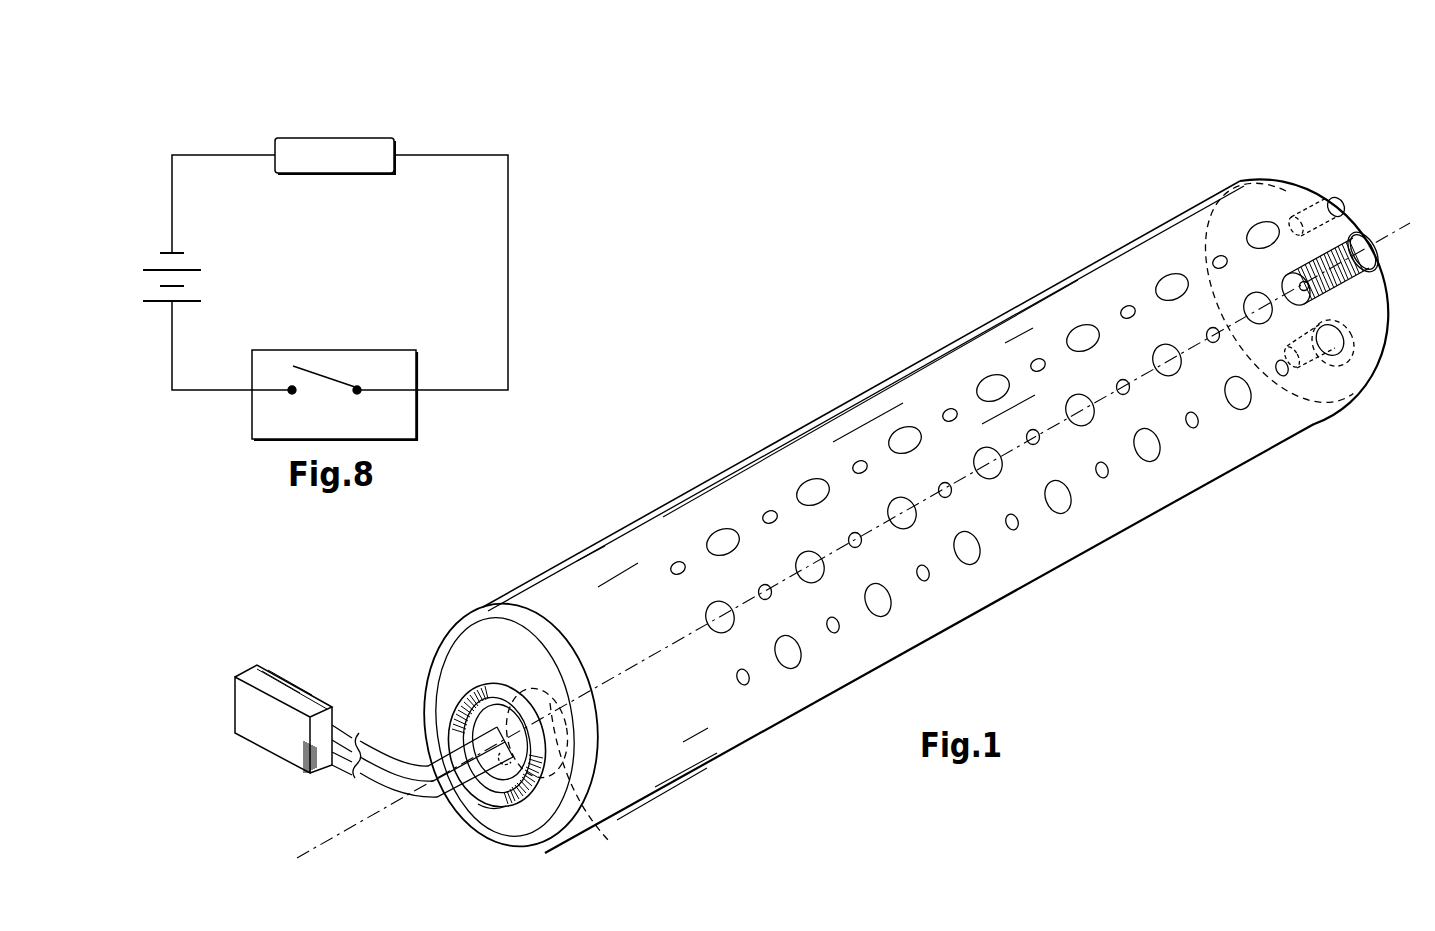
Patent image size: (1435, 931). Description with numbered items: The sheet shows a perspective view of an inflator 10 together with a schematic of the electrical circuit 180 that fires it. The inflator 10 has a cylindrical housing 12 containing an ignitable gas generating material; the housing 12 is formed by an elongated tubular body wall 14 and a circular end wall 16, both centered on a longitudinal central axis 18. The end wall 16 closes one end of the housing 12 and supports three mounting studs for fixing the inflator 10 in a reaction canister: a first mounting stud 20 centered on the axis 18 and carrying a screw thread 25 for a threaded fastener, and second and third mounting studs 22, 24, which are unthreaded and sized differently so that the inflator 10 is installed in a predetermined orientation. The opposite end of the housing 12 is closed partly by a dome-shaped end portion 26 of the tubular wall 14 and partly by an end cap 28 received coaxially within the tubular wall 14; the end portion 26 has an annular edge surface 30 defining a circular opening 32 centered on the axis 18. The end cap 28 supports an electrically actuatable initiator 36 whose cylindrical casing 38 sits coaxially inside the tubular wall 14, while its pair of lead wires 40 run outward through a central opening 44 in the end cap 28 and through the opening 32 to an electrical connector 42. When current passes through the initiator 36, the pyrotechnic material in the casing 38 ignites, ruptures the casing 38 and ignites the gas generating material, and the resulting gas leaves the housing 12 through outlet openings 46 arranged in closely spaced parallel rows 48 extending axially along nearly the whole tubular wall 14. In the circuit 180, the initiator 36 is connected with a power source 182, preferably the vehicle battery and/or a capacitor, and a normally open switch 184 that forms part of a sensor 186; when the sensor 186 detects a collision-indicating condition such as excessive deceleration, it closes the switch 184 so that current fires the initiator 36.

In FIG. 1, the inflator 10 is at (1033, 204).
In FIG. 1, the cylindrical housing 12 is at (988, 306).
In FIG. 1, the elongated tubular body wall 14 is at (893, 418).
In FIG. 1, the circular end wall 16 is at (1270, 206).
In FIG. 1, the longitudinal central axis 18 is at (350, 832).
In FIG. 1, the first mounting stud 20 is at (1367, 248).
In FIG. 1, the second mounting stud 22 is at (1329, 197).
In FIG. 1, the third mounting stud 24 is at (1350, 334).
In FIG. 1, the screw thread 25 is at (1373, 264).
In FIG. 1, the end portion of the tubular wall 26 is at (480, 638).
In FIG. 1, the end cap 28 is at (458, 688).
In FIG. 1, the annular edge surface 30 is at (503, 807).
In FIG. 1, the circular opening 32 is at (468, 792).
In FIG. 8, the electrically actuatable initiator 36 is at (377, 141).
In FIG. 1, the electrically actuatable initiator 36 is at (582, 742).
In FIG. 1, the cylindrical casing 38 is at (588, 786).
In FIG. 1, the electrical lead wires 40 is at (368, 784).
In FIG. 1, the electrical connector 42 is at (278, 693).
In FIG. 1, the central opening in the end cap 44 is at (462, 727).
In FIG. 1, the outlet openings 46 is at (797, 472).
In FIG. 1, the parallel rows 48 is at (660, 578).
In FIG. 8, the electrical circuit 180 is at (190, 108).
In FIG. 8, the power source 182 is at (156, 268).
In FIG. 8, the normally open switch 184 is at (322, 379).
In FIG. 8, the sensor 186 is at (416, 421).